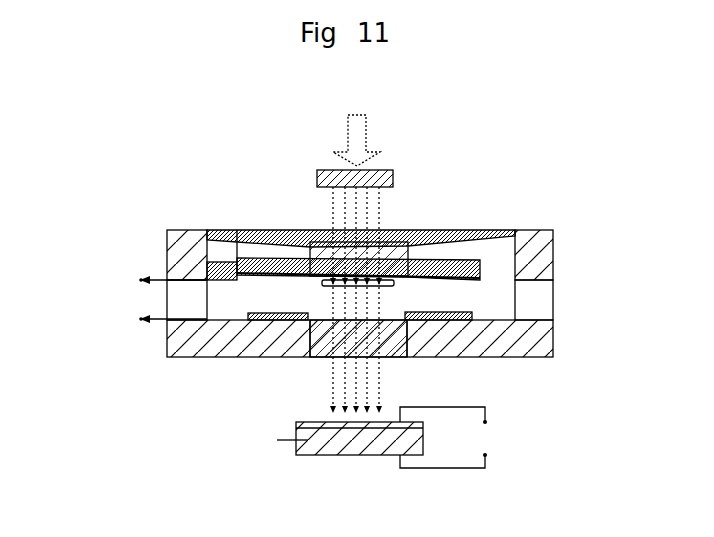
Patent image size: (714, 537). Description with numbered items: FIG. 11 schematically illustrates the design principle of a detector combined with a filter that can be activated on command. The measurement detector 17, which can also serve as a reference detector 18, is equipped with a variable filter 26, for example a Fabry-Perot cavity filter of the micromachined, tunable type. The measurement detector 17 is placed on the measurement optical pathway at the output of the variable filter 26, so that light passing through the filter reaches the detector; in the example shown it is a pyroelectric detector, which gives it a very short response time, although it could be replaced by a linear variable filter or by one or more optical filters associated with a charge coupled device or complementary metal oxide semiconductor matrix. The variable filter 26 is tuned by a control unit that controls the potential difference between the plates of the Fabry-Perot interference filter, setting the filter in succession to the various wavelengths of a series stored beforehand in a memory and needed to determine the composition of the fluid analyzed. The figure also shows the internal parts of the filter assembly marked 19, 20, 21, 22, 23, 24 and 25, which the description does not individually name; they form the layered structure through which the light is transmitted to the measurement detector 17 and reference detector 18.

The measurement detector 17 is at (388, 455).
The reference detector 18 is at (343, 447).
The light source 19 is at (396, 228).
The transparent window in substrate 20 is at (392, 330).
The cavity / spacer 21 is at (492, 290).
The bottom electrodes 22 is at (262, 321).
The substrate 23 is at (490, 320).
The upper membrane 24 is at (235, 236).
The lower membrane 25 is at (274, 234).
The variable filter 26 is at (322, 283).